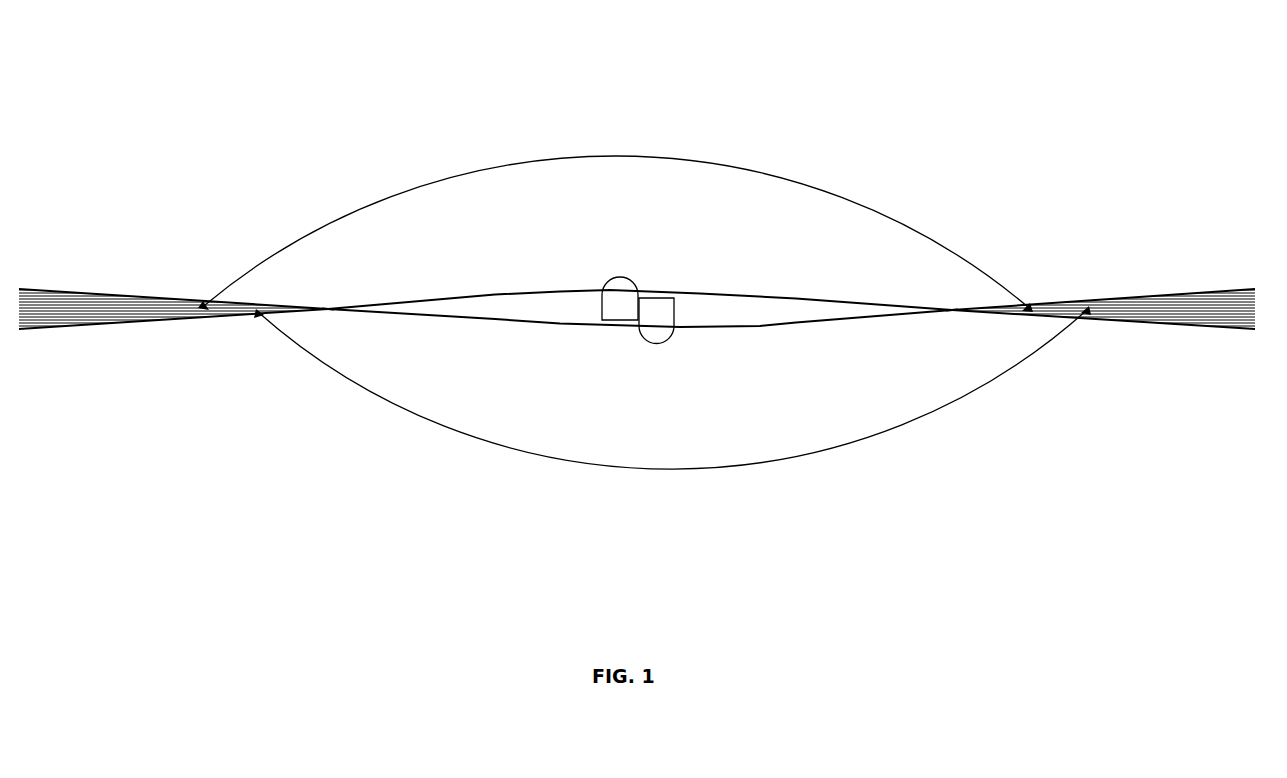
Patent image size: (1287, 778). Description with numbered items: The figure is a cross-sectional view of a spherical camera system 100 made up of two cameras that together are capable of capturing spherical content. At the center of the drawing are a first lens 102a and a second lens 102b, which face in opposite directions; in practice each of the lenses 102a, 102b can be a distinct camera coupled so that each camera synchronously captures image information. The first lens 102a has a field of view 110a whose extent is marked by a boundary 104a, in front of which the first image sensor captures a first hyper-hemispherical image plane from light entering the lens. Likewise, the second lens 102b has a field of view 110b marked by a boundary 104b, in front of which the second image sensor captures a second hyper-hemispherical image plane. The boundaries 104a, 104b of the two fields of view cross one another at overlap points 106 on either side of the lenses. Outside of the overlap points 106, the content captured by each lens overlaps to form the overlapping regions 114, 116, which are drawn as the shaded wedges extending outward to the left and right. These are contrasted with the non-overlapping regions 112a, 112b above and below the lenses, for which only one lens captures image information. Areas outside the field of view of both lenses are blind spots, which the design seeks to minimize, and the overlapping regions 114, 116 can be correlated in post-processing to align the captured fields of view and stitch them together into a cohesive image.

The spherical camera system 100 is at (691, 313).
The first lens 102a is at (618, 268).
The second lens 102b is at (656, 357).
The boundary 104a is at (495, 288).
The boundary 104b is at (497, 326).
The overlap points 106 is at (328, 300).
The field of view 110a is at (615, 221).
The field of view 110b is at (672, 401).
The non-overlapping region 112a is at (636, 26).
The non-overlapping region 112b is at (637, 585).
The overlapping region 114 is at (174, 309).
The overlapping region 116 is at (1103, 309).